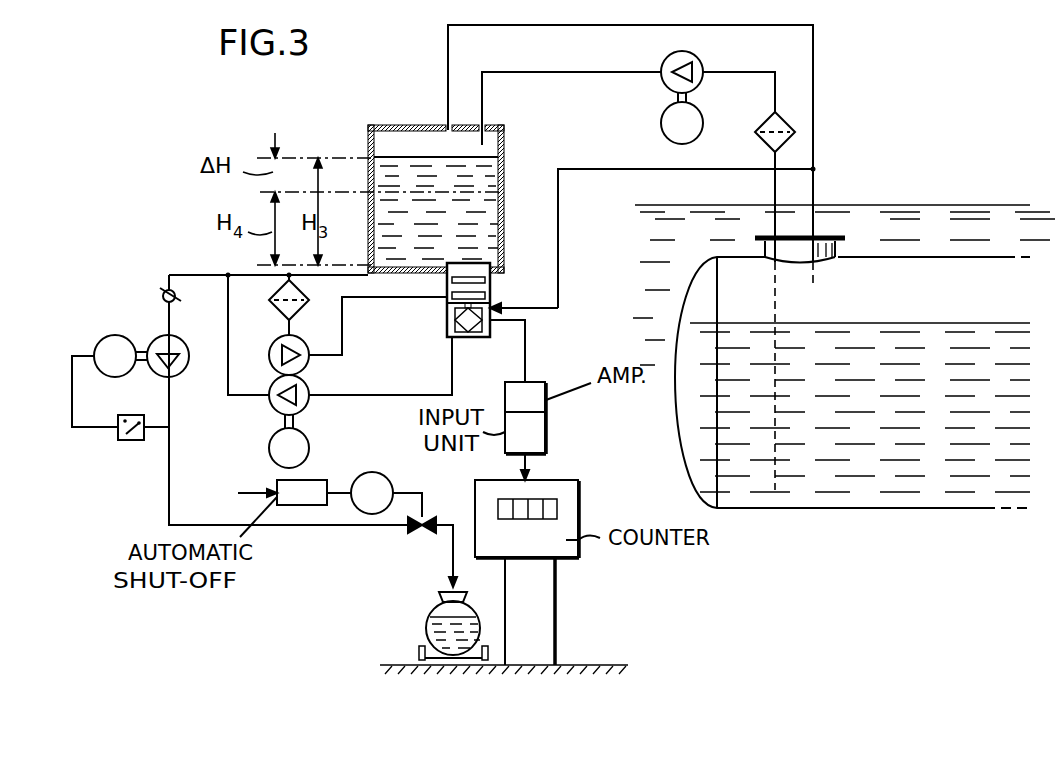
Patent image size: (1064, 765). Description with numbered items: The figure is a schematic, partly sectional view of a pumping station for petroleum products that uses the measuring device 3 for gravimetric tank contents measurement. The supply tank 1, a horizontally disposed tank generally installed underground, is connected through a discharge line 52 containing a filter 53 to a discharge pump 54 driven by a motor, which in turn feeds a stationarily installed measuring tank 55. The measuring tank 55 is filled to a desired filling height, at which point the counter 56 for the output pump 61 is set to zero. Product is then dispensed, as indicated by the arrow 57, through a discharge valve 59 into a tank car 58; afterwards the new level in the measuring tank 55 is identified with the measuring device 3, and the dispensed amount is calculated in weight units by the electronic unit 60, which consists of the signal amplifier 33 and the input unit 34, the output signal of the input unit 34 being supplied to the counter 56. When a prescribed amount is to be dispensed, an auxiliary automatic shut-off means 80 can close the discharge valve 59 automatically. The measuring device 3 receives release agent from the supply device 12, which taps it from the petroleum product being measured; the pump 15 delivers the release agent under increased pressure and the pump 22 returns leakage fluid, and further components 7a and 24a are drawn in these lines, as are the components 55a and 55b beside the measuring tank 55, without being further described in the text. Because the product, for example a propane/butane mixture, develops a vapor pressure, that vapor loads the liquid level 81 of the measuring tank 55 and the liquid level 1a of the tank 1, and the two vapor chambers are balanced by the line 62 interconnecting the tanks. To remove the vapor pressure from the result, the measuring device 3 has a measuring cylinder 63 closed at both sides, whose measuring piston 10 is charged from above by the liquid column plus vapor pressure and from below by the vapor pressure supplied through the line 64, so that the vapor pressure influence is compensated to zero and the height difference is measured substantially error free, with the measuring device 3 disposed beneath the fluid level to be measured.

The supply tank 1 is at (877, 266).
The liquid level 1a is at (892, 320).
The measuring device 3 is at (503, 291).
The filter 7a is at (272, 295).
The measuring piston 10 is at (449, 291).
The supply device 12 is at (335, 376).
The pump 15 is at (276, 353).
The pump 22 is at (283, 409).
The check valve 24a is at (160, 288).
The signal amplifier 33 is at (529, 395).
The input unit 34 is at (536, 440).
The discharge line 52 is at (729, 72).
The filter 53 is at (788, 127).
The discharge pump 54 is at (672, 58).
The measuring tank 55 is at (400, 126).
The pump 55a is at (152, 342).
The switch 55b is at (117, 440).
The counter 56 is at (550, 510).
The arrow 57 is at (450, 548).
The tank car 58 is at (428, 625).
The discharge valve 59 is at (413, 530).
The electronic unit 60 is at (556, 431).
The output pump 61 is at (535, 587).
The line 62 is at (512, 25).
The measuring cylinder 63 is at (472, 338).
The line 64 is at (620, 168).
The auxiliary automatic shut-off means 80 is at (300, 500).
The liquid level 81 is at (453, 157).